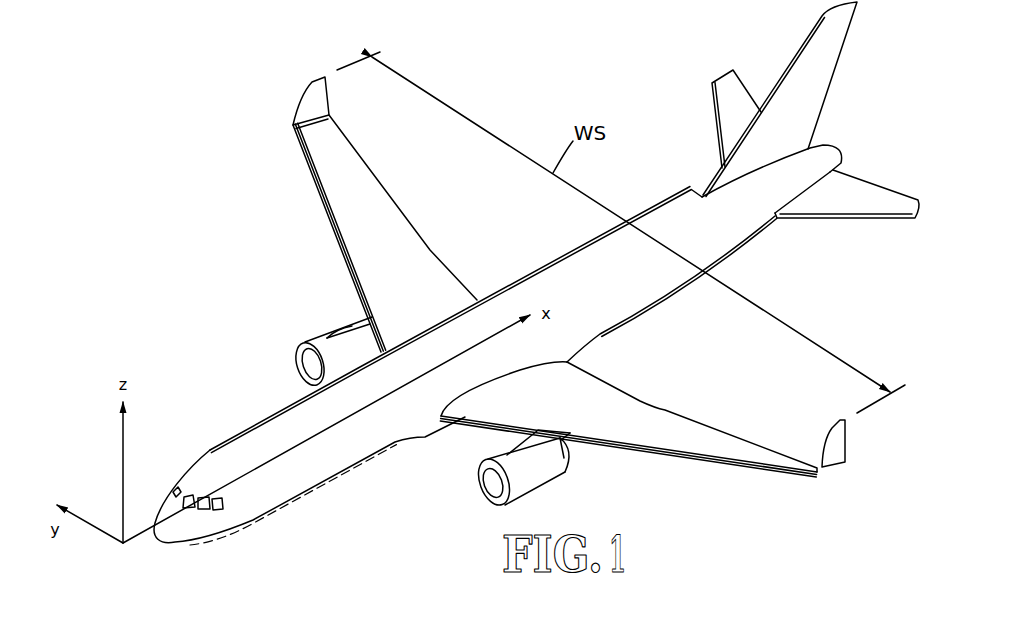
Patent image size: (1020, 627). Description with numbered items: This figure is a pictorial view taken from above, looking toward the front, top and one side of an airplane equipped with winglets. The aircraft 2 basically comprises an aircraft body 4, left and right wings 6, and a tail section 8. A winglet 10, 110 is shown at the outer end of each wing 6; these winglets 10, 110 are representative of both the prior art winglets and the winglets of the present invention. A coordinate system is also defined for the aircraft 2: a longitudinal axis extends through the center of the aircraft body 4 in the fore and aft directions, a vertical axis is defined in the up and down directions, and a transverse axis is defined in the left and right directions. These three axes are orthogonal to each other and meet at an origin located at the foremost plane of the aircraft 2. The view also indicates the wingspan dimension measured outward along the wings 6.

The aircraft 2 is at (225, 282).
The aircraft body 4 is at (291, 486).
The wings 6 is at (331, 215).
The tail section 8 is at (838, 103).
The winglet 10 is at (508, 311).
The winglet 110 is at (285, 114).